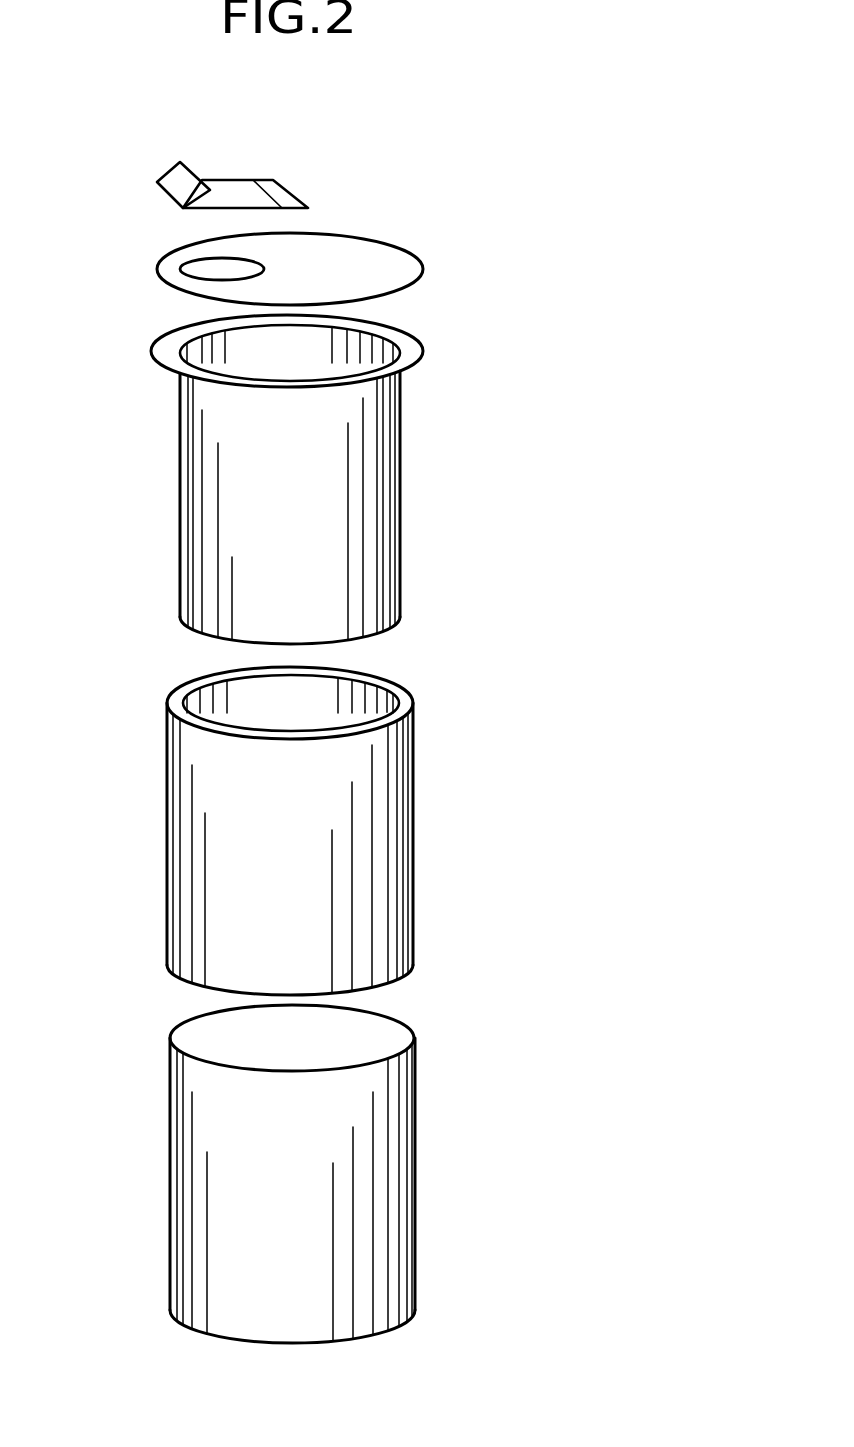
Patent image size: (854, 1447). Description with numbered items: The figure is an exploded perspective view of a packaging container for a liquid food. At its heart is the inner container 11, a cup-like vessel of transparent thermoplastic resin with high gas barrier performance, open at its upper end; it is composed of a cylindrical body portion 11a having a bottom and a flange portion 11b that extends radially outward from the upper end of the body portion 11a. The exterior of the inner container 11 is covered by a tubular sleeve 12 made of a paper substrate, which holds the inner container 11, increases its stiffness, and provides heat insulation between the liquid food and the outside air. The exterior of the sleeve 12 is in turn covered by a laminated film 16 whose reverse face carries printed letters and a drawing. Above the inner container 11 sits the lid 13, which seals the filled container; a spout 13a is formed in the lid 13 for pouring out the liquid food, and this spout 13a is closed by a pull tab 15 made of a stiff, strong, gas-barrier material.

The inner container 11 is at (340, 475).
The body portion 11a is at (402, 417).
The flange portion 11b is at (415, 346).
The sleeve 12 is at (417, 832).
The lid 13 is at (405, 240).
The spout 13a is at (182, 272).
The pull tab 15 is at (238, 181).
The film 16 is at (418, 1150).